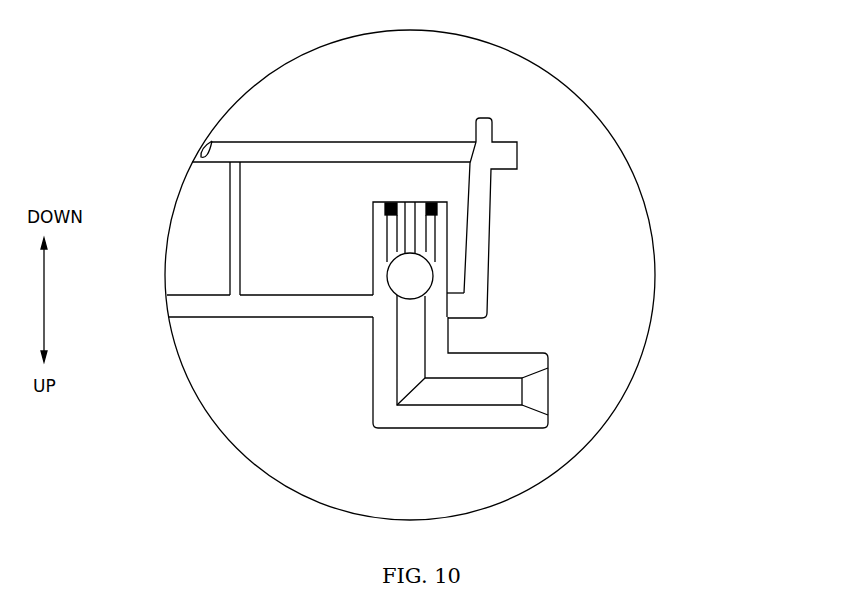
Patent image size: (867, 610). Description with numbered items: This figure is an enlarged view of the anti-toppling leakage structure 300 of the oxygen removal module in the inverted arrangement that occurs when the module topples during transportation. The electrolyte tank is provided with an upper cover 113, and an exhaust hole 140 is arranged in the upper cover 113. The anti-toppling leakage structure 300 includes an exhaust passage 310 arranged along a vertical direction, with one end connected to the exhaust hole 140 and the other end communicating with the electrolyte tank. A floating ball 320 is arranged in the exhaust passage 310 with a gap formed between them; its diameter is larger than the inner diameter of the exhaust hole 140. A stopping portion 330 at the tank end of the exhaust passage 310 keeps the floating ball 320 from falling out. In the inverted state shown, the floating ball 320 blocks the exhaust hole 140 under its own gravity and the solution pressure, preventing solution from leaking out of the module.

The upper cover 113 is at (205, 232).
The exhaust hole 140 is at (408, 353).
The anti-toppling leakage structure 300 is at (756, 197).
The exhaust passage 310 is at (427, 235).
The floating ball 320 is at (410, 275).
The stopping portion 330 is at (447, 201).